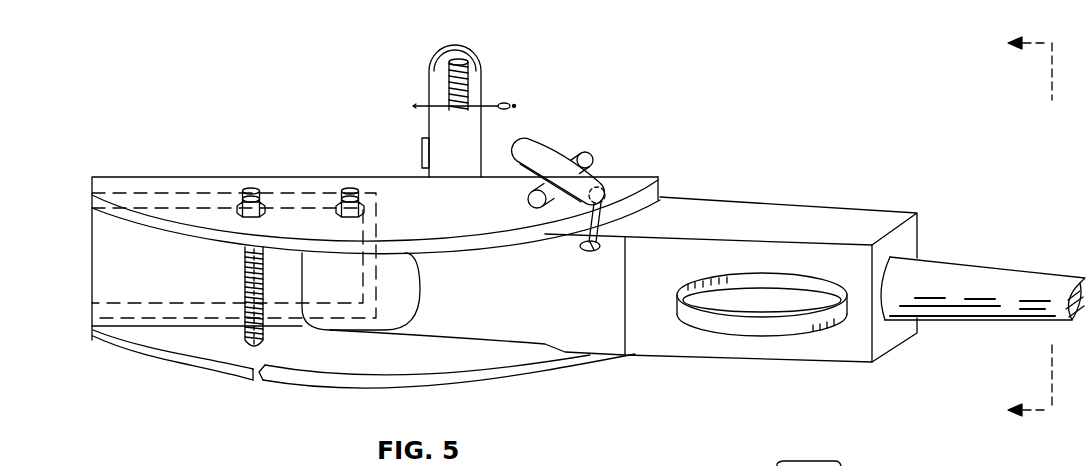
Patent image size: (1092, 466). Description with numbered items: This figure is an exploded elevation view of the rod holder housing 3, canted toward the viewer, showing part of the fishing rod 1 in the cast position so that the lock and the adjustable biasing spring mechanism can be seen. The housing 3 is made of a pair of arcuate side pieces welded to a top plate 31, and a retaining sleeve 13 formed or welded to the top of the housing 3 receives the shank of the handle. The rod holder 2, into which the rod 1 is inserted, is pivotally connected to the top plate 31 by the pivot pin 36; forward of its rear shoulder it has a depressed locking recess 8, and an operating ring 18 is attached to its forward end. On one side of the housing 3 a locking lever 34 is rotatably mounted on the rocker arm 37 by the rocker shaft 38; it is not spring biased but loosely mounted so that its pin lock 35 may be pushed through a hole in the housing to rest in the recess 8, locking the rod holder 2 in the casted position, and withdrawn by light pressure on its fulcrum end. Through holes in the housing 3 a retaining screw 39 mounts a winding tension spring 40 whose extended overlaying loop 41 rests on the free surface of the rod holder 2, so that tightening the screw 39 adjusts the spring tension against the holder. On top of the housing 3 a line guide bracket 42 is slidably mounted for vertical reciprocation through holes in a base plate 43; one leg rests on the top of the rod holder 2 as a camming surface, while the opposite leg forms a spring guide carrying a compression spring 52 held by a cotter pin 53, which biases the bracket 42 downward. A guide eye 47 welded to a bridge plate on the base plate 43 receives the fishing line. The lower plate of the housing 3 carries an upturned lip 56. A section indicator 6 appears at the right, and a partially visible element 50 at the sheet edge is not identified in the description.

The fishing rod 1 is at (957, 320).
The rod holder 2 is at (697, 348).
The rod holder housing 3 is at (172, 368).
The section line 6- 6 is at (1018, 229).
The depressed locking recess 8 is at (590, 250).
The retaining sleeve 13 is at (135, 192).
The operating ring 18 is at (778, 334).
The top plate 31 is at (92, 268).
The locking lever 34 is at (537, 150).
The pin lock 35 is at (605, 235).
The pivot pin 36 is at (350, 190).
The rocker arm 37 is at (572, 162).
The rocker shaft 38 is at (591, 158).
The retaining screw 39 is at (251, 190).
The winding tension spring 40 is at (245, 281).
The extended overlaying loop 41 is at (420, 285).
The line guide bracket 42 is at (447, 111).
The base plate 43 is at (430, 120).
The guide eye 47 is at (421, 150).
The fragment 50 is at (829, 461).
The compression spring 52 is at (470, 76).
The cotter pin 53 is at (430, 107).
The upturned lip 56 is at (262, 378).